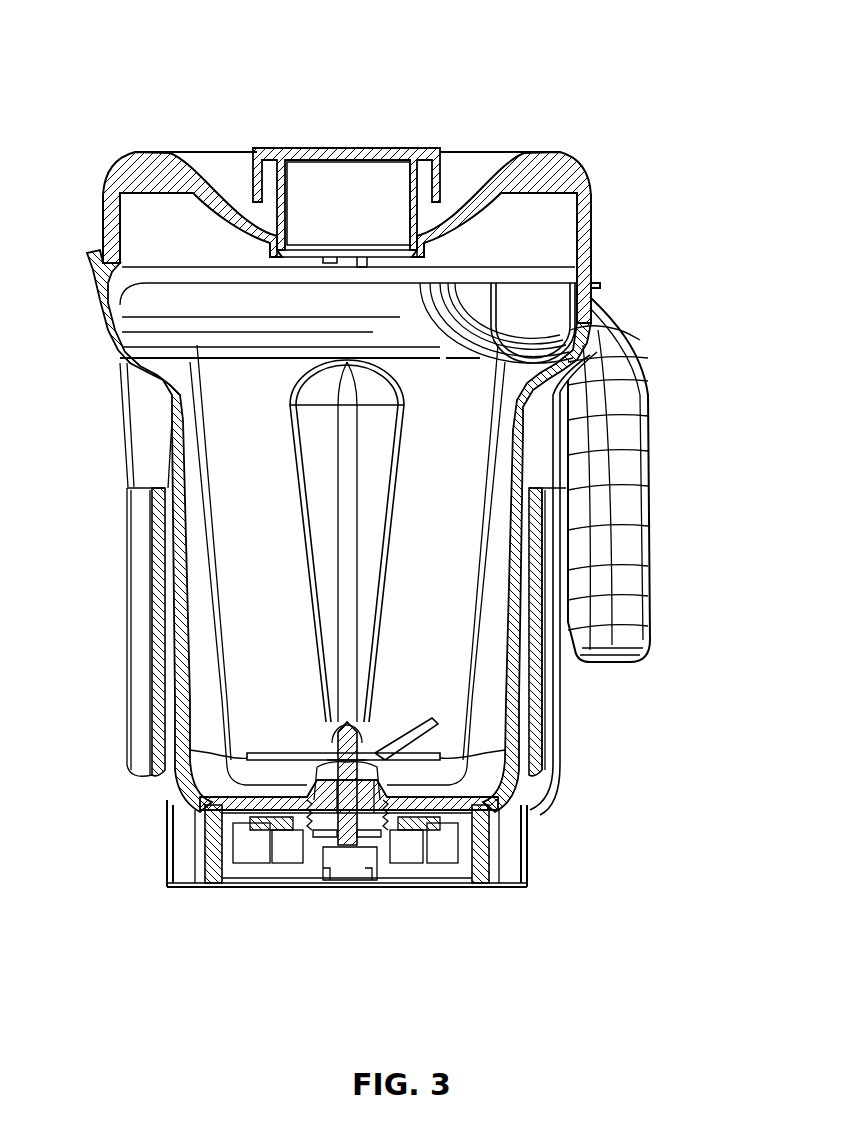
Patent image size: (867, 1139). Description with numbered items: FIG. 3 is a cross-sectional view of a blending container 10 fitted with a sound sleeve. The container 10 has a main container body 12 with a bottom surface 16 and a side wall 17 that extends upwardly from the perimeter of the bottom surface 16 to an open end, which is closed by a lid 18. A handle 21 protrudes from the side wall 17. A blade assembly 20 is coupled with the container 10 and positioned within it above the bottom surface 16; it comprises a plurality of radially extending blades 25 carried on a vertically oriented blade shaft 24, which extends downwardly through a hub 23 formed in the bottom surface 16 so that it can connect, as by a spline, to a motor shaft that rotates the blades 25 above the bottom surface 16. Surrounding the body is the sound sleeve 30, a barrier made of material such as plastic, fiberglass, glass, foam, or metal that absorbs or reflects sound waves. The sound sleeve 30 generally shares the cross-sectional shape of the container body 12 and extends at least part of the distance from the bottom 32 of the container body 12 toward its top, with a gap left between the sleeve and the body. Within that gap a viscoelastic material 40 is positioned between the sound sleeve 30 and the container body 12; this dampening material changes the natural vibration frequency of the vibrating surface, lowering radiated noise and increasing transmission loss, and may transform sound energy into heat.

The container 10 is at (135, 55).
The main container body 12 is at (167, 423).
The bottom surface 16 is at (462, 848).
The side wall 17 is at (173, 733).
The lid 18 is at (470, 162).
The blade assembly 20 is at (360, 898).
The handle 21 is at (627, 422).
The hub 23 is at (367, 838).
The blade shaft 24 is at (337, 847).
The blades 25 is at (450, 747).
The sound sleeve 30 is at (553, 702).
The bottom of the container body 32 is at (540, 862).
The viscoelastic material 40 is at (530, 588).